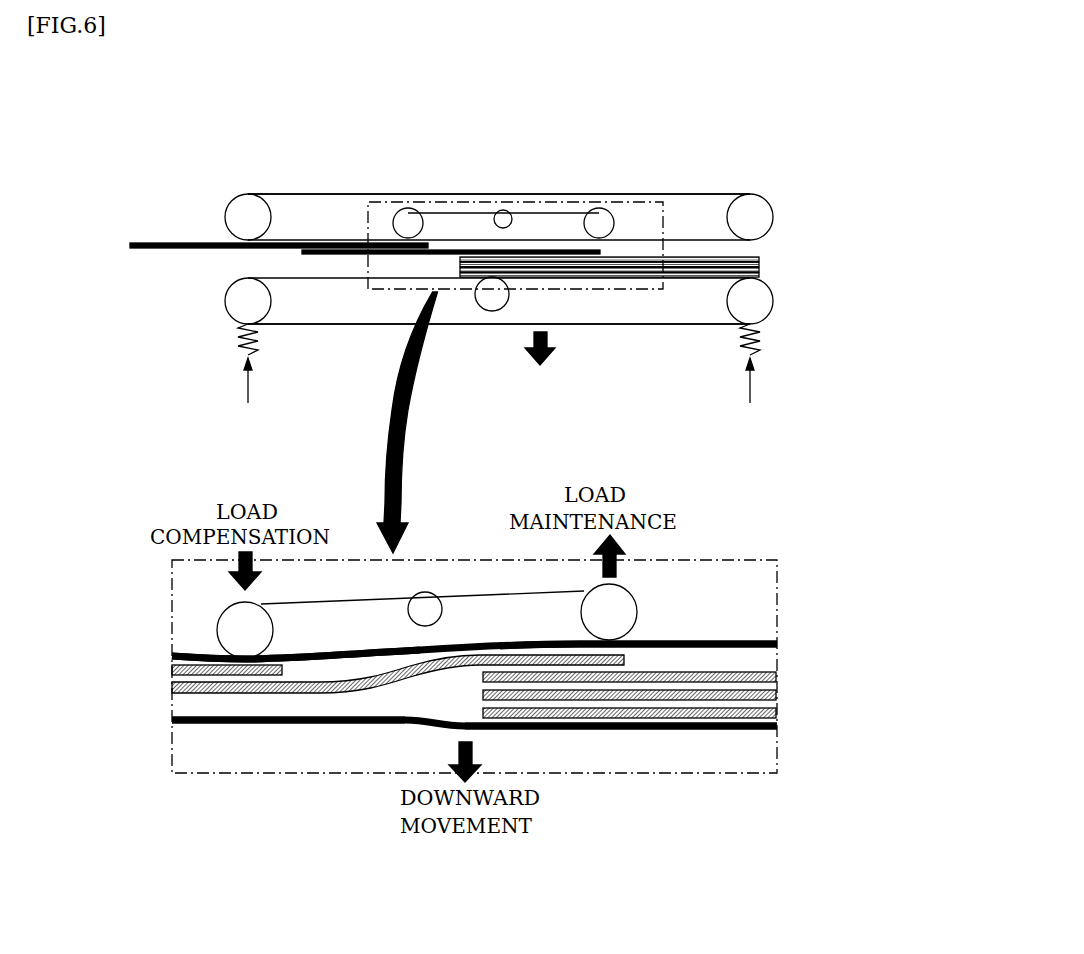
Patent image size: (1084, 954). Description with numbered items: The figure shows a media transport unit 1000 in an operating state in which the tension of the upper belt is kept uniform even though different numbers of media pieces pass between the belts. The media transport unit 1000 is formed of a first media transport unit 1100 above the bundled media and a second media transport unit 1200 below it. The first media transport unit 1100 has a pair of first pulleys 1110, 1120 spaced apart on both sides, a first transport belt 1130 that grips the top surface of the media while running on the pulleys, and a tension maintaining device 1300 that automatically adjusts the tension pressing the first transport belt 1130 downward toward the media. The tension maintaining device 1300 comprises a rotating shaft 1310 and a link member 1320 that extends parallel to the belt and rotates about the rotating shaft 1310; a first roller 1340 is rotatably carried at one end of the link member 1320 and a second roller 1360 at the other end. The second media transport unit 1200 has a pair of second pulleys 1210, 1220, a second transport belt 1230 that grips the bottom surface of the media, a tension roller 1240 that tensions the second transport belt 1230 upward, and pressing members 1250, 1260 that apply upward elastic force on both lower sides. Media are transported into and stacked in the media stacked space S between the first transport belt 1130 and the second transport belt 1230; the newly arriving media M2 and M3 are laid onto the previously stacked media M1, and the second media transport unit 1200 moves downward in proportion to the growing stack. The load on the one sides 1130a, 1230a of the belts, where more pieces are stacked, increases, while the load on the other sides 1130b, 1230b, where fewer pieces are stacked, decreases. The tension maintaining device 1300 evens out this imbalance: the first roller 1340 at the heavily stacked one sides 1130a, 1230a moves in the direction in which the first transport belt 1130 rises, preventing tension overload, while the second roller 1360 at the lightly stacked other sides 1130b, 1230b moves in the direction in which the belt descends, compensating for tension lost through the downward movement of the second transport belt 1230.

The media transport unit 1000 is at (475, 464).
The first media transport unit 1100 is at (678, 178).
The first pulley 1110 is at (752, 217).
The first pulley 1120 is at (248, 217).
The first transport belt 1130 is at (343, 194).
The one side of the first transport belt 1130a is at (697, 640).
The other side of the first transport belt 1130b is at (217, 656).
The second media transport unit 1200 is at (623, 347).
The second pulley 1210 is at (752, 302).
The second pulley 1220 is at (248, 301).
The second transport belt 1230 is at (366, 326).
The one side of the second transport belt 1230a is at (640, 730).
The other side of the second transport belt 1230b is at (235, 724).
The tension roller 1240 is at (493, 306).
The pressing member 1250 is at (760, 343).
The pressing member 1260 is at (238, 345).
The tension maintaining device 1300 is at (540, 198).
The rotating shaft 1310 is at (504, 210).
The link member 1320 is at (465, 212).
The first roller 1340 is at (599, 221).
The second roller 1360 is at (408, 222).
The stacked electrode sheets M1 is at (718, 258).
The sequentially transported media M2 is at (445, 250).
The sequentially transported media M3 is at (180, 248).
The media stacked space S is at (588, 684).